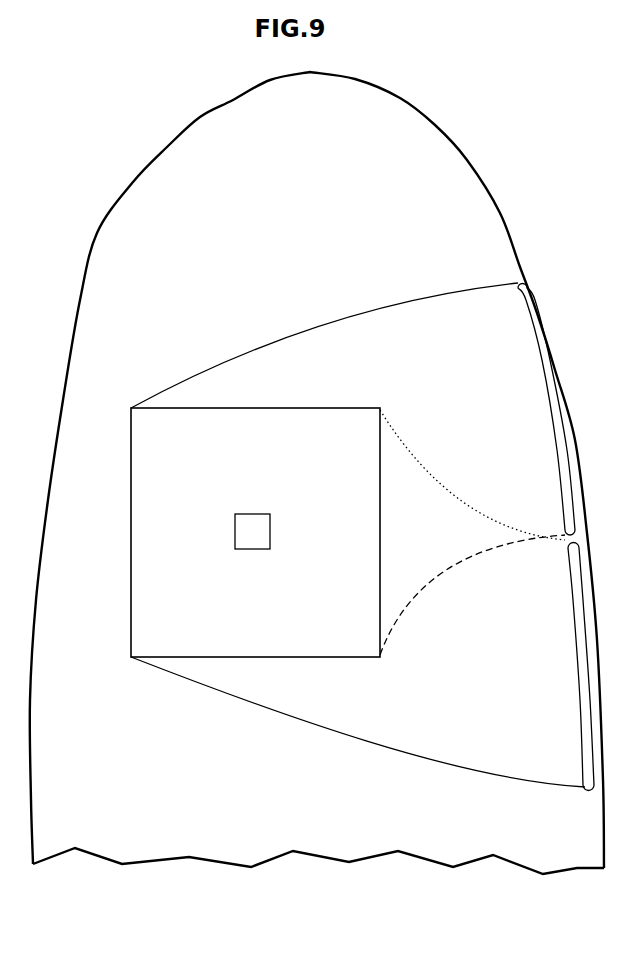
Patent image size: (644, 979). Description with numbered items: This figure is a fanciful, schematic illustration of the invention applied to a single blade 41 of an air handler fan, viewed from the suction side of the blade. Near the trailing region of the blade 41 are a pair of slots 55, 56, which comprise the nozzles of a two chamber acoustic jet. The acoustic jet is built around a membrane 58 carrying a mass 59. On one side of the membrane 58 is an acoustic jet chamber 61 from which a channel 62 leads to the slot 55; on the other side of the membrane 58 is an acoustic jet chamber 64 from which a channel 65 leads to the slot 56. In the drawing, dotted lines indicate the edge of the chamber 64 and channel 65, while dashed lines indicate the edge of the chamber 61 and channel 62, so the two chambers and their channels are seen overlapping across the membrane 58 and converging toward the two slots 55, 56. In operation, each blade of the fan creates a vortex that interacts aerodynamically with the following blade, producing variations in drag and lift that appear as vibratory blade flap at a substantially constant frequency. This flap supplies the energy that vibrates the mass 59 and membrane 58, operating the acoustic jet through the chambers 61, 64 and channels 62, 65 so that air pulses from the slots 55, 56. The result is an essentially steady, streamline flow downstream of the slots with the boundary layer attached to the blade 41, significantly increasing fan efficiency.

The blade 41 is at (162, 182).
The slot 55 is at (545, 366).
The slot 56 is at (573, 605).
The membrane 58 is at (131, 598).
The mass 59 is at (262, 528).
The acoustic jet chamber 61 is at (203, 458).
The channel 62 is at (455, 399).
The acoustic jet chamber 64 is at (218, 623).
The channel 65 is at (490, 659).